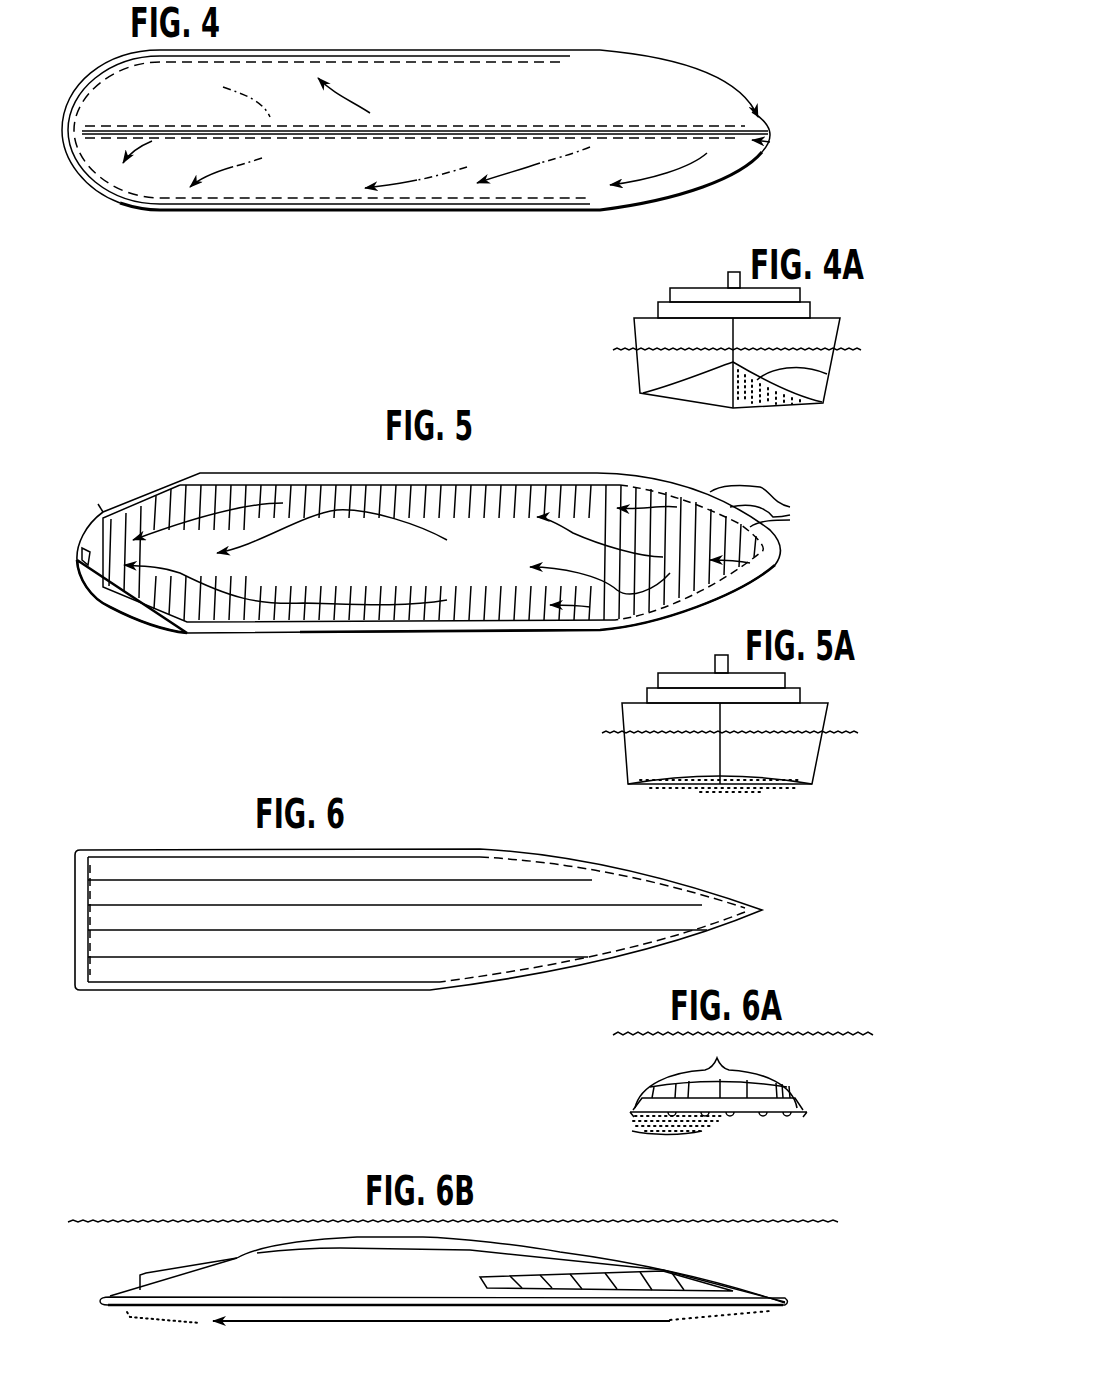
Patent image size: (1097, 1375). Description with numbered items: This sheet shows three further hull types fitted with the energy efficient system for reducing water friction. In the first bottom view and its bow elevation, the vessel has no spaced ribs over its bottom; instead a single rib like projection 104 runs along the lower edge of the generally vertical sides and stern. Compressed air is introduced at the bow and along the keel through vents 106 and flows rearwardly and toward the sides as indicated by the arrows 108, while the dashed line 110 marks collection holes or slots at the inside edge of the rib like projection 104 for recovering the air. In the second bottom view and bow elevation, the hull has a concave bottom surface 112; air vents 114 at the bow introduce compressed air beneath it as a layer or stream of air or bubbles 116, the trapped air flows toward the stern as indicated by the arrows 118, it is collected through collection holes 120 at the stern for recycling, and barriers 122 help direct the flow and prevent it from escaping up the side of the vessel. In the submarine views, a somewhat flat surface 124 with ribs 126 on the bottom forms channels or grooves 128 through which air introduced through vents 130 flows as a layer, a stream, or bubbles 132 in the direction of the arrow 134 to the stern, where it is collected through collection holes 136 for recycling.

In FIG. 4, the rib like projection 104 is at (596, 210).
In FIG. 4A, the rib like projection 104 is at (822, 404).
In FIG. 4, the vents 106 is at (778, 130).
In FIG. 4A, the vents 106 is at (827, 376).
In FIG. 4, the arrows 108 is at (200, 74).
In FIG. 4, the dashed line 110 is at (573, 63).
In FIG. 5A, the concave bottom surface 112 is at (757, 782).
In FIG. 5, the air vents 114 is at (768, 506).
In FIG. 5A, the layer or stream of air or bubbles 116 is at (755, 790).
In FIG. 5, the arrows 118 is at (355, 507).
In FIG. 5, the collection holes 120 is at (99, 506).
In FIG. 5, the barriers 122 is at (87, 578).
In FIG. 6, the flat surface 124 is at (593, 915).
In FIG. 6A, the flat surface 124 is at (745, 1115).
In FIG. 6B, the flat surface 124 is at (605, 1310).
In FIG. 6, the ribs 126 is at (245, 907).
In FIG. 6, the channels or grooves 128 is at (453, 973).
In FIG. 6A, the channels or grooves 128 is at (758, 1121).
In FIG. 6, the vents 130 is at (552, 856).
In FIG. 6A, the bubbles 132 is at (670, 1136).
In FIG. 6B, the arrow 134 is at (216, 1322).
In FIG. 6, the collection holes 136 is at (97, 870).